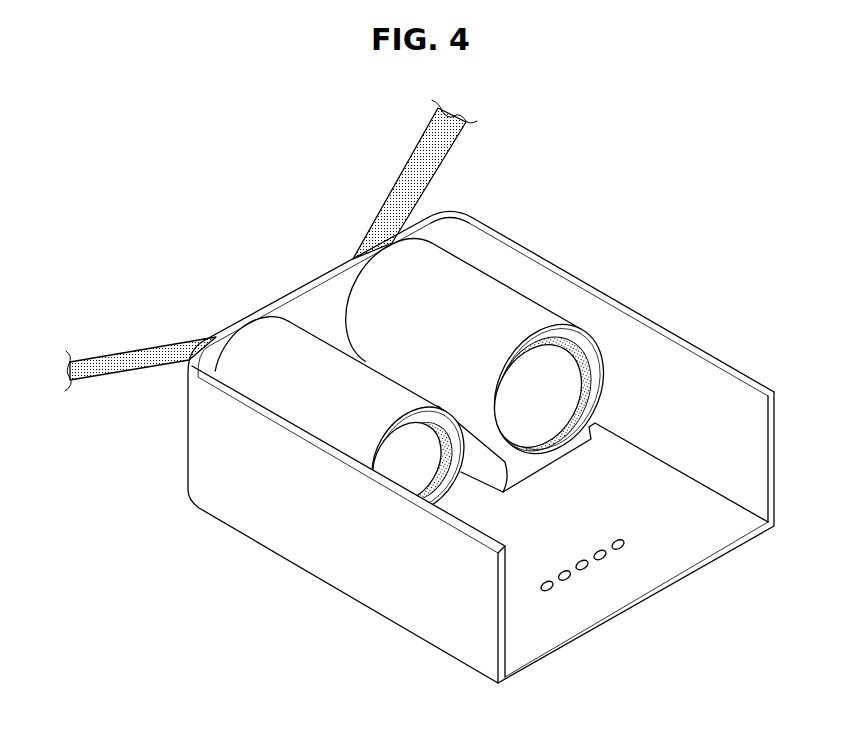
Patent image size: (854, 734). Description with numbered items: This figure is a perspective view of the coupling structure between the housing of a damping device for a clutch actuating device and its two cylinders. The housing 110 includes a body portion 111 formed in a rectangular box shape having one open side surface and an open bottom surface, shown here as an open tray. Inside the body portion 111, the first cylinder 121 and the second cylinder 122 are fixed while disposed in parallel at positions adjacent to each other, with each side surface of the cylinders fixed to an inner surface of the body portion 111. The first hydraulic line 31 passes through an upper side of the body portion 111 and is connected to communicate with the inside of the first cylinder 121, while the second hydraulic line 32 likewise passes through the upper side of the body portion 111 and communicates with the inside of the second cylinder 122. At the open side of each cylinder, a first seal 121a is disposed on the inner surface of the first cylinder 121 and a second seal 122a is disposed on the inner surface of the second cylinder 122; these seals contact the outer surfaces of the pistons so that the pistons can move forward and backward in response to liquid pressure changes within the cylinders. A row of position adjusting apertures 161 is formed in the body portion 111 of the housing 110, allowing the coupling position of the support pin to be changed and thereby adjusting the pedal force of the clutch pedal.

The housing 110 is at (648, 309).
The body portion 111 is at (558, 275).
The first cylinder 121 is at (392, 297).
The first seal 121a is at (576, 397).
The second cylinder 122 is at (275, 358).
The second seal 122a is at (445, 488).
The position adjusting apertures 161 is at (614, 553).
The first hydraulic line 31 is at (427, 162).
The second hydraulic line 32 is at (118, 352).